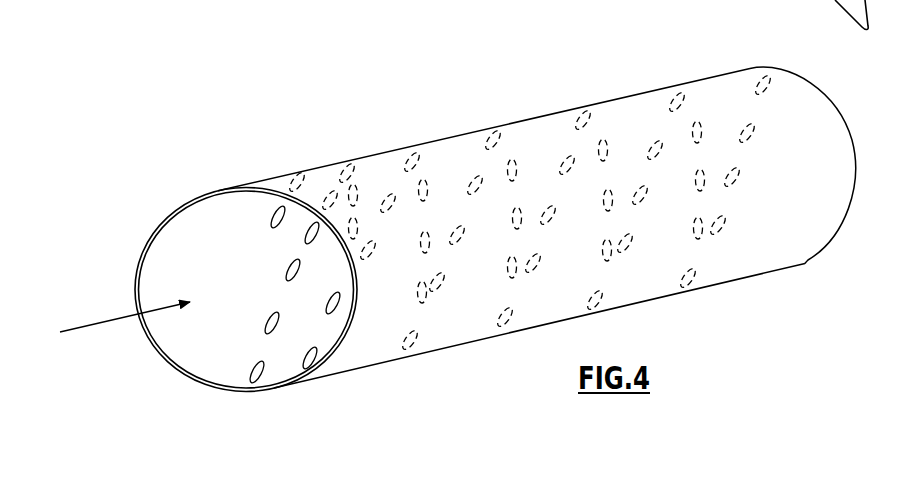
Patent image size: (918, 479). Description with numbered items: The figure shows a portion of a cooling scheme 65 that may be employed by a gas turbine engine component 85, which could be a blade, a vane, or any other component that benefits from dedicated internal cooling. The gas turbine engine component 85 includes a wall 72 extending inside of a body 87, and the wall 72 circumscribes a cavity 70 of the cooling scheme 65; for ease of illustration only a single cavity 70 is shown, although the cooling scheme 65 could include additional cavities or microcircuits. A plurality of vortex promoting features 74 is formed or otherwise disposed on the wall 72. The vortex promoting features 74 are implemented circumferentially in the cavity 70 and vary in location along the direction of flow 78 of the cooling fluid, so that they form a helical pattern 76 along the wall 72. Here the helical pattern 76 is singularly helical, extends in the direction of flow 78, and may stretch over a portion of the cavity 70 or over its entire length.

The cooling scheme 65 is at (361, 184).
The cavity 70 is at (246, 254).
The wall 72 is at (270, 195).
The vortex promoting features 74 is at (389, 206).
The helical pattern 76 is at (621, 142).
The direction of flow 78 is at (92, 330).
The gas turbine engine component 85 is at (458, 225).
The body 87 is at (482, 346).